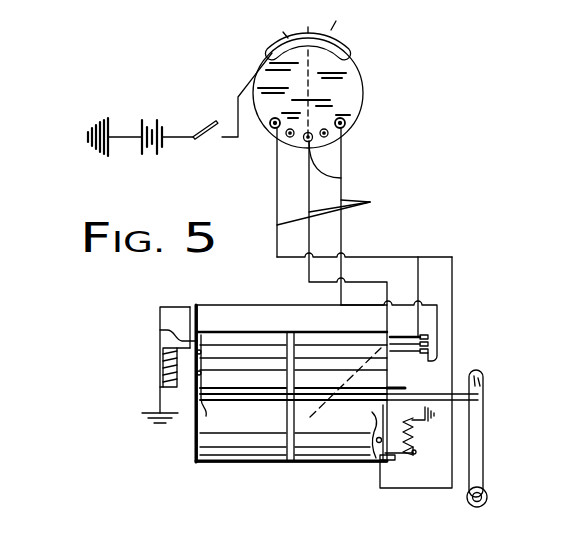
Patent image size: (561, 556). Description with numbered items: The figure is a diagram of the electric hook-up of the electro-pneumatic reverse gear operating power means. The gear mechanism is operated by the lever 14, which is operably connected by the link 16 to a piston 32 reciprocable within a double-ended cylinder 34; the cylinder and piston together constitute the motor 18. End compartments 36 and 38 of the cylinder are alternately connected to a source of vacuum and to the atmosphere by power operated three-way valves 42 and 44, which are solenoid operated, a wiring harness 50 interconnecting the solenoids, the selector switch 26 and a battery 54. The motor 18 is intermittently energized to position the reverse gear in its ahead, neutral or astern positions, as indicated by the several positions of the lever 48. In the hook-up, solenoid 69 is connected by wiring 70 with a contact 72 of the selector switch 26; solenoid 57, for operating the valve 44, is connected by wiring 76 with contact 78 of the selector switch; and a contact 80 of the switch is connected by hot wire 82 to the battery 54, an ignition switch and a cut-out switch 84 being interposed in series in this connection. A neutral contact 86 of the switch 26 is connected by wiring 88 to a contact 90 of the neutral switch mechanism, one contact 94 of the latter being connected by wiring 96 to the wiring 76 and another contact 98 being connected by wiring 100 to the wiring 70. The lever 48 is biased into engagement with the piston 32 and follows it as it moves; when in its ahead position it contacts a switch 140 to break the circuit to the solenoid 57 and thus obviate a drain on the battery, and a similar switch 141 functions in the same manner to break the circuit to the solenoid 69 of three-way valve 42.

The selector switch 26 is at (363, 78).
The contact 80 is at (322, 46).
The contact 72 is at (348, 121).
The contact 78 is at (271, 131).
The hot wire 82 is at (247, 80).
The cut-out switch 84 is at (212, 133).
The battery 54 is at (152, 115).
The wiring 76 is at (275, 178).
The wiring 70 is at (341, 163).
The neutral contact 86 is at (344, 178).
The wiring harness 50 is at (400, 220).
The wiring 88 is at (365, 283).
The wiring 100 is at (400, 302).
The wiring 96 is at (420, 286).
The contact 94 is at (423, 338).
The contact 90 is at (424, 345).
The contact 98 is at (436, 360).
The end compartment 36 is at (210, 428).
The piston 32 is at (289, 425).
The double-ended cylinder 34 is at (190, 455).
The lever 48 is at (312, 423).
The motor 18 is at (323, 469).
The switch 141 is at (158, 329).
The three-way valve 42 is at (160, 368).
The solenoid 69 is at (162, 378).
The end compartment 38 is at (365, 458).
The link 16 is at (481, 395).
The lever 14 is at (479, 440).
The switch 140 is at (407, 447).
The three-way valve 44 is at (416, 450).
The solenoid 57 is at (416, 453).